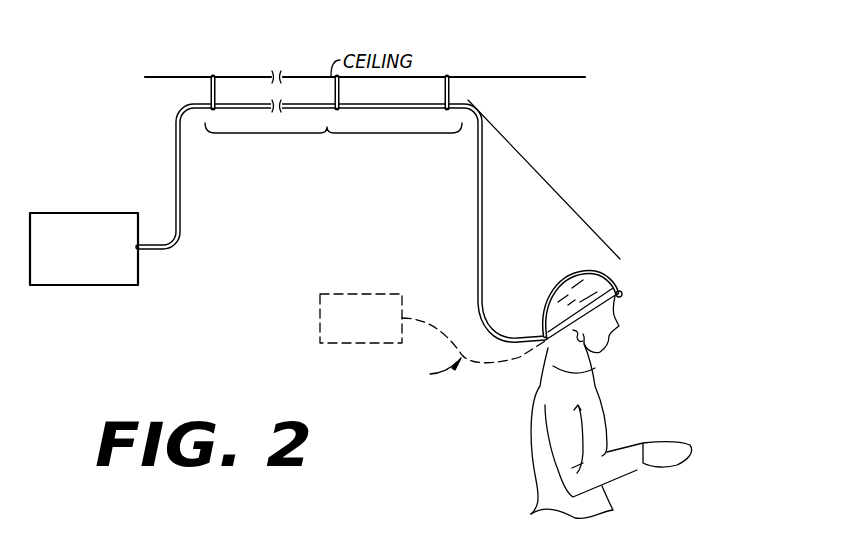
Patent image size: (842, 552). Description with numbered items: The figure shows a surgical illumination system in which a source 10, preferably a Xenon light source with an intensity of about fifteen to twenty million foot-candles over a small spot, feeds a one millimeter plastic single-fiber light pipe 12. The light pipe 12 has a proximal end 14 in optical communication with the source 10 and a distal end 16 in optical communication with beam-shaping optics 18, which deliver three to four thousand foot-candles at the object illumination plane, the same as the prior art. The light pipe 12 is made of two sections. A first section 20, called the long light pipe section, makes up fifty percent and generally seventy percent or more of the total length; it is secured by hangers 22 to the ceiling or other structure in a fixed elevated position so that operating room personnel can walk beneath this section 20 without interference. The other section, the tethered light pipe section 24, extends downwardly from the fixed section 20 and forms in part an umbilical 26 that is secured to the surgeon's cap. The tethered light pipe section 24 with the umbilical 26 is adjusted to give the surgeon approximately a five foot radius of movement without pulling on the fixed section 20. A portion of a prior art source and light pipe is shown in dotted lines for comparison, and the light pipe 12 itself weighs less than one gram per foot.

The source 10 is at (78, 213).
The light pipe 12 is at (419, 82).
The proximal end 14 is at (150, 250).
The distal end 16 is at (628, 281).
The beam-shaping optics 18 is at (623, 294).
The first section 20 is at (333, 142).
The hangers 22 is at (210, 90).
The tethered light pipe section 24 is at (544, 179).
The umbilical 26 is at (520, 337).